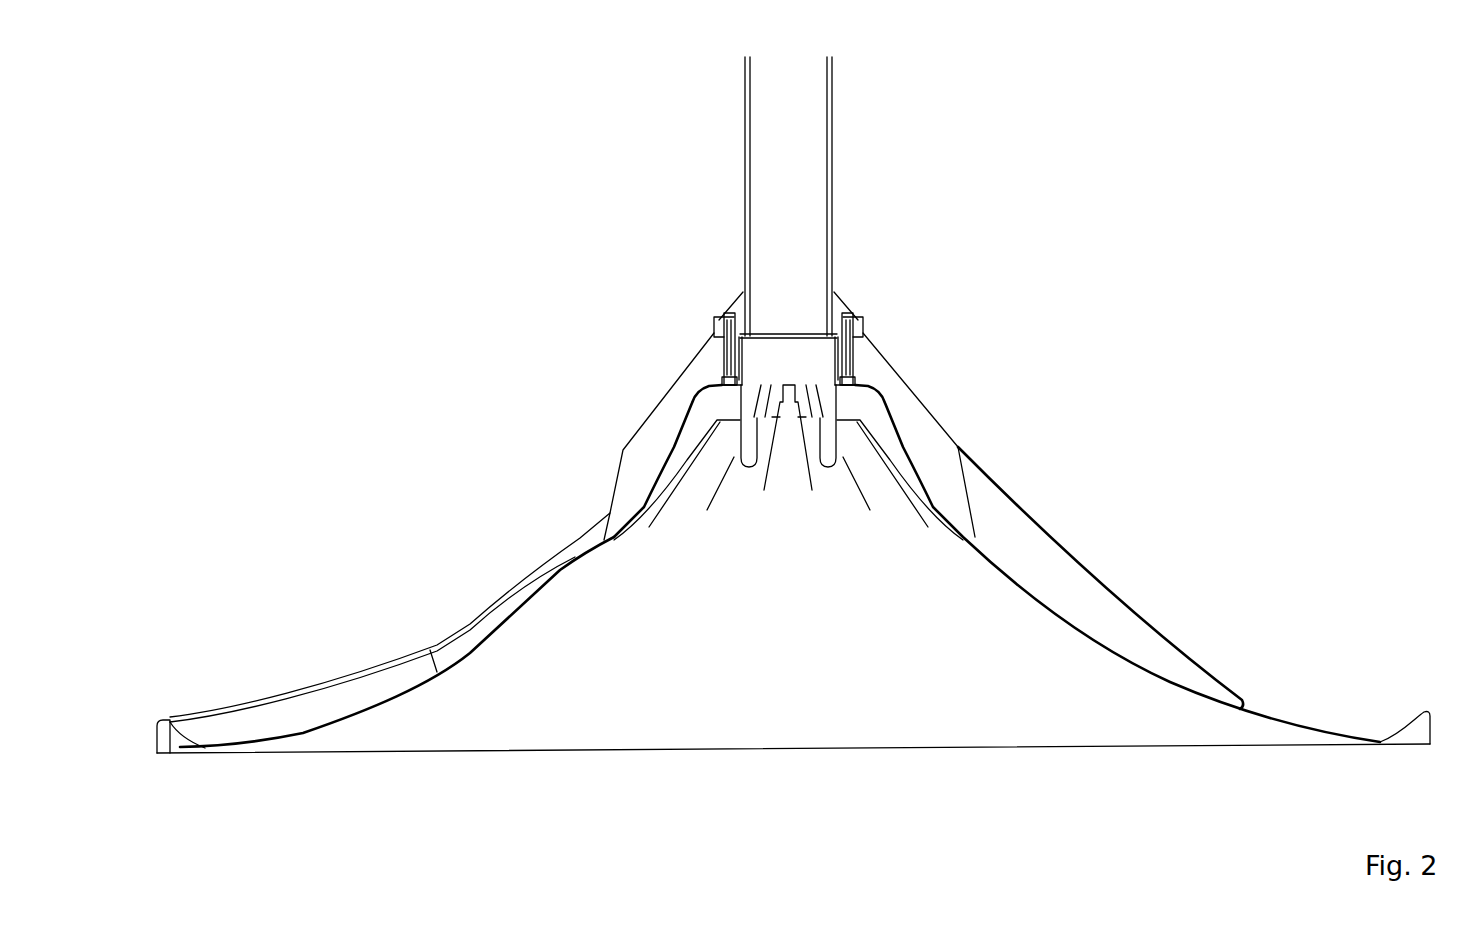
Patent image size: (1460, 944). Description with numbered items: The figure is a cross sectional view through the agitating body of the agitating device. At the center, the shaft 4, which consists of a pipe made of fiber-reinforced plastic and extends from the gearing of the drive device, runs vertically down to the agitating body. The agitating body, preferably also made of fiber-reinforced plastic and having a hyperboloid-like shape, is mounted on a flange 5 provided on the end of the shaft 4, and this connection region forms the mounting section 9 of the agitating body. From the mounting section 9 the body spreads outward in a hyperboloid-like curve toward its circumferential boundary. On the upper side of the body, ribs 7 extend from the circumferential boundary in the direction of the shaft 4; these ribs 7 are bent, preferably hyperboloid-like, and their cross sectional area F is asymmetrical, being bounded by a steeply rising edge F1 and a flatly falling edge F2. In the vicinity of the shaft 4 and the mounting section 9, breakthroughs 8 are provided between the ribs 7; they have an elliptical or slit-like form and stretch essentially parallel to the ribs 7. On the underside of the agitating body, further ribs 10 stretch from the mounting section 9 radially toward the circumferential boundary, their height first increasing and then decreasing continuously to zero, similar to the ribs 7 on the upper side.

The shaft 4 is at (832, 240).
The flange 5 is at (858, 326).
The mounting section 9 is at (865, 358).
The further ribs 10 is at (718, 407).
The breakthroughs 8 is at (845, 459).
The ribs 7 is at (389, 640).
The cross sectional area F is at (169, 742).
The steep edge F1 is at (157, 737).
The flat falling edge F2 is at (220, 733).